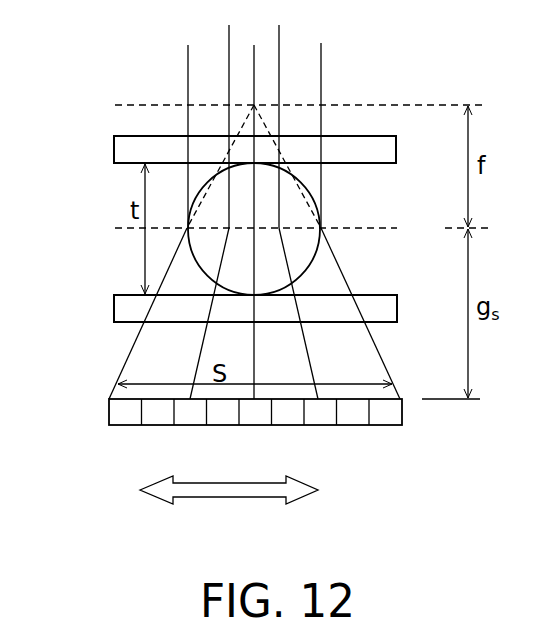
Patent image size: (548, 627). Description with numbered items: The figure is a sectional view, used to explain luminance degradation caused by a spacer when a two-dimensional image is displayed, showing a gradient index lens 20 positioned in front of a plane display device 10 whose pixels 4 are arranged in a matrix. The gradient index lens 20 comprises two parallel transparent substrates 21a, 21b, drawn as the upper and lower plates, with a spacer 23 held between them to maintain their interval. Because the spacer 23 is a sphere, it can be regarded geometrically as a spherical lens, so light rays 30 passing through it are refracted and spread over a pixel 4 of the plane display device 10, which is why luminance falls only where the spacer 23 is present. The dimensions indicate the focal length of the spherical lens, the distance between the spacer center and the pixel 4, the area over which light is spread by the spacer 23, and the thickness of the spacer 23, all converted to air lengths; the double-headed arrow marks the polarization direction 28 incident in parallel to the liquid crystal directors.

The pixel 4 is at (395, 415).
The plane display device 10 is at (48, 433).
The gradient index lens 20 is at (48, 158).
The transparent substrate 21a is at (383, 303).
The transparent substrate 21b is at (383, 152).
The spacer 23 is at (217, 208).
The polarization direction 28 is at (243, 488).
The light beam 30 is at (321, 62).